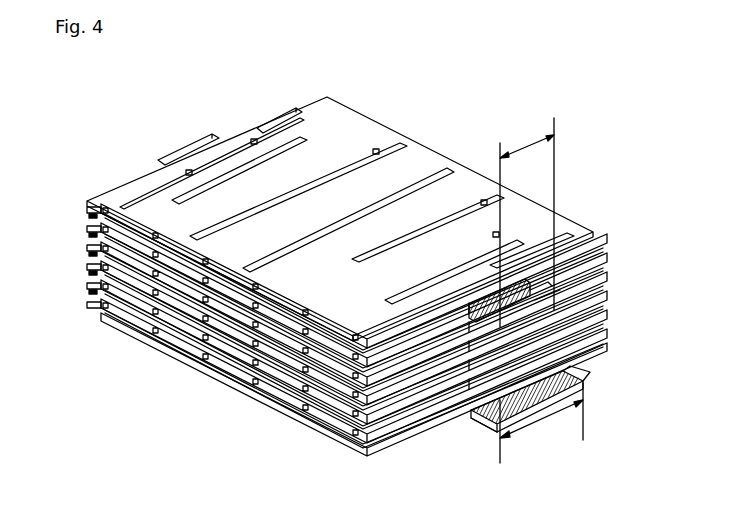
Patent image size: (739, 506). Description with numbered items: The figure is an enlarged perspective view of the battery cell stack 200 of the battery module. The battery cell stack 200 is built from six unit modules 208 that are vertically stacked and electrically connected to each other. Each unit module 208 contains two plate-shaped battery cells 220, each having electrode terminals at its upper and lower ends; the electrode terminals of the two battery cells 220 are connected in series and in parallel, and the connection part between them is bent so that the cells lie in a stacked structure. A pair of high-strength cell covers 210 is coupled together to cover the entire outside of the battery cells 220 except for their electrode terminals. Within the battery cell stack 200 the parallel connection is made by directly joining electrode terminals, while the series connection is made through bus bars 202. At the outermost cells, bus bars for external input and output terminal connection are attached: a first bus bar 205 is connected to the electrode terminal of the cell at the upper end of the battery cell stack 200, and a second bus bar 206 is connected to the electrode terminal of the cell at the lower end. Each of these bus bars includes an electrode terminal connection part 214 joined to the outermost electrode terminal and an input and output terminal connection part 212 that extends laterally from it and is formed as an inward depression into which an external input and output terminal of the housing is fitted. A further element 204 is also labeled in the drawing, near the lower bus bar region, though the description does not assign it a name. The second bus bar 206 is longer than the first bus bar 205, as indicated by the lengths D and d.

The battery cell stack 200 is at (108, 97).
The bus bar 202 is at (468, 410).
The battery cell 204 is at (580, 362).
The first bus bar 205 is at (590, 283).
The second bus bar 206 is at (488, 425).
The unit module 208 is at (130, 327).
The cell cover 210 is at (408, 168).
The input and output terminal connection part 212 is at (590, 373).
The electrode terminal connection part 214 is at (480, 422).
The battery cell 220 is at (233, 142).